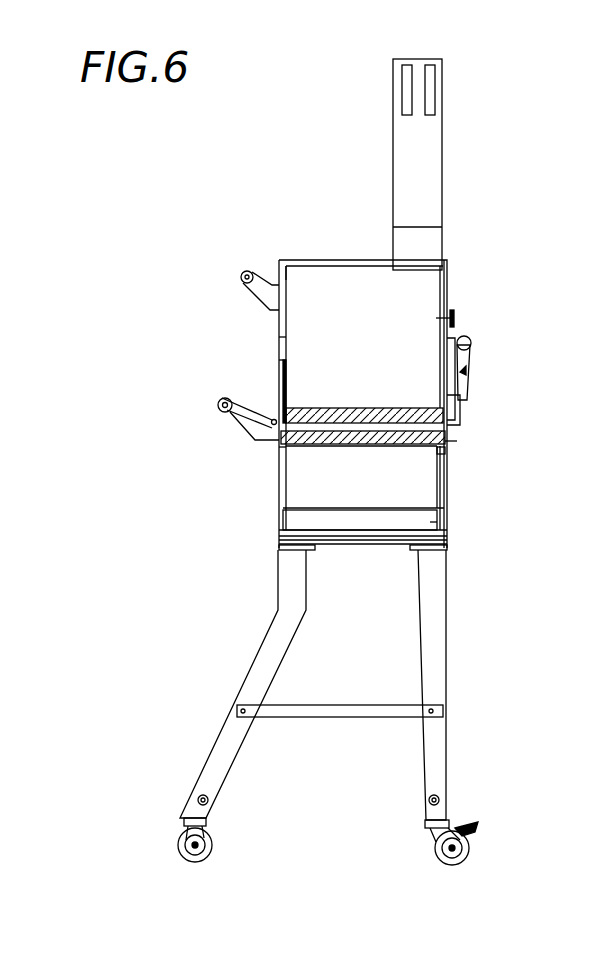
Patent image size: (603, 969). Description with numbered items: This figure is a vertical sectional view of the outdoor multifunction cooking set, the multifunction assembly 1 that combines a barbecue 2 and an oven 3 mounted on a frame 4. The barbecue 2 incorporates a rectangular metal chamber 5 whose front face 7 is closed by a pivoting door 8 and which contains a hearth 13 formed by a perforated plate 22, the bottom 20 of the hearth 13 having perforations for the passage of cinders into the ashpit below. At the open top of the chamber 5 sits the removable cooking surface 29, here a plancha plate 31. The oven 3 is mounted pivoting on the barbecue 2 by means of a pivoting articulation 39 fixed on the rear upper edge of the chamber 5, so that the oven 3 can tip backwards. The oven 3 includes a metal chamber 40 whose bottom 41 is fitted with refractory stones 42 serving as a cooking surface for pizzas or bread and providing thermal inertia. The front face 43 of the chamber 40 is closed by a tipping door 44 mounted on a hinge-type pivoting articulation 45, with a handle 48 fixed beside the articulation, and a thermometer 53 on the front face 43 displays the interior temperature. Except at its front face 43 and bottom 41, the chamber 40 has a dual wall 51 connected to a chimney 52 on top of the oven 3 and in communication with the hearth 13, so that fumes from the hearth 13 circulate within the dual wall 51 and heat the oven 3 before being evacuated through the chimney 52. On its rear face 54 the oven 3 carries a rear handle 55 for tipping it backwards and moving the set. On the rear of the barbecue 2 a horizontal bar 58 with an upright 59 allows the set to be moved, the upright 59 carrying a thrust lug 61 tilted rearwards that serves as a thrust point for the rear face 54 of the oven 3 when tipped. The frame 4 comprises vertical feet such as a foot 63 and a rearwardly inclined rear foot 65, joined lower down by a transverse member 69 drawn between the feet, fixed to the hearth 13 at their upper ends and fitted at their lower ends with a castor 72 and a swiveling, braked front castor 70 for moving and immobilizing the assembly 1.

The multifunction assembly 1 is at (270, 157).
The barbecue 2 is at (240, 485).
The oven 3 is at (243, 358).
The frame 4 is at (475, 654).
The chamber 5 is at (268, 510).
The front face 7 is at (478, 463).
The door 8 is at (450, 485).
The hearth 13 is at (416, 541).
The perforated plate 22 is at (448, 527).
The bottom 20 is at (326, 505).
The cooking surface 29 is at (357, 430).
The plancha plate 31 is at (328, 430).
The pivoting articulation 39 is at (230, 418).
The metal chamber 40 is at (296, 259).
The bottom 41 is at (422, 321).
The refractory stones 42 is at (385, 408).
The front face 43 is at (450, 287).
The door 44 is at (470, 355).
The pivoting articulation 45 is at (457, 422).
The handle 48 is at (470, 385).
The dual wall 51 is at (298, 264).
The chimney 52 is at (443, 150).
The thermometer 53 is at (456, 318).
The rear face 54 is at (280, 347).
The rear handle 55 is at (242, 276).
The horizontal bar 58 is at (220, 400).
The upright 59 is at (279, 447).
The thrust lug 61 is at (272, 396).
The vertical foot 63 is at (432, 752).
The rear foot 65 is at (230, 745).
The cross brace 69 is at (343, 717).
The front castor 70 is at (470, 850).
The castor 72 is at (210, 846).